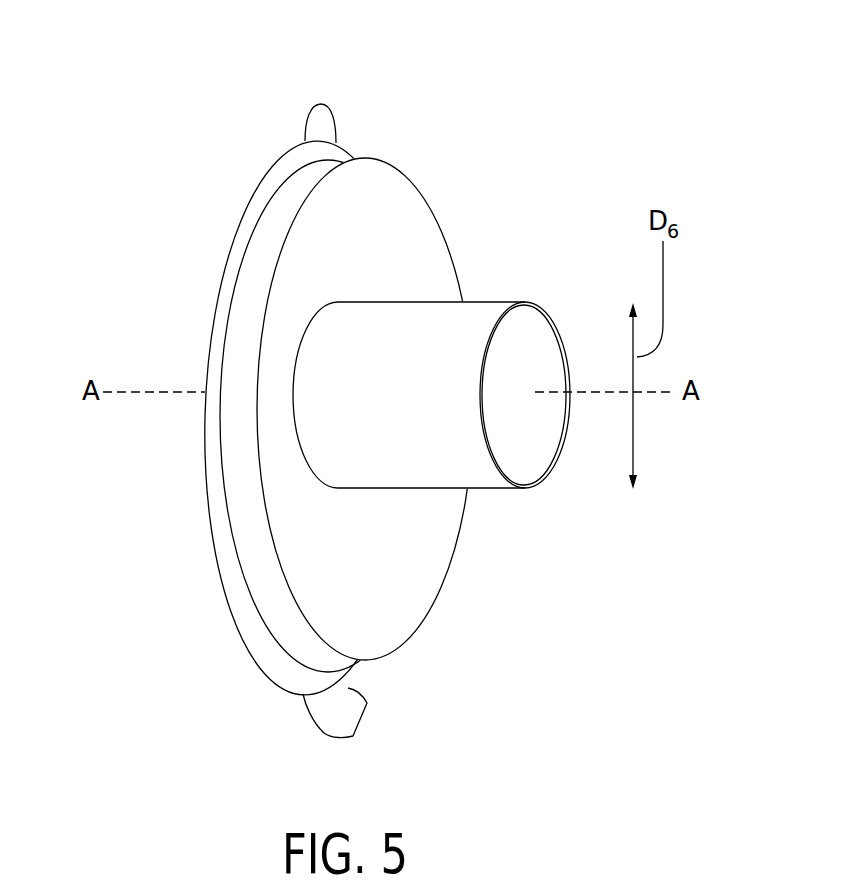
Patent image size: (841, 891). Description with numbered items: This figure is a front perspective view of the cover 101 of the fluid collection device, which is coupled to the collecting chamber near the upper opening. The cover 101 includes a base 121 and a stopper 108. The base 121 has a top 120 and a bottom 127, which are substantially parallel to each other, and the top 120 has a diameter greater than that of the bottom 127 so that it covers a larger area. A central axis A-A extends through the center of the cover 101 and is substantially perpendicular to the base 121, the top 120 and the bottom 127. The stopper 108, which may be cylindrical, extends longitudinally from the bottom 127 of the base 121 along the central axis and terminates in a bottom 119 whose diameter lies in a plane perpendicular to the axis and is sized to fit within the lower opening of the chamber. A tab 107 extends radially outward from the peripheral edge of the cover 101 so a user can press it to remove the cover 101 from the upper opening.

The cover 101 is at (151, 81).
The tab 107 is at (337, 121).
The stopper 108 is at (435, 297).
The bottom 119 is at (537, 422).
The top 120 is at (227, 245).
The base 121 is at (380, 650).
The bottom 127 is at (423, 545).